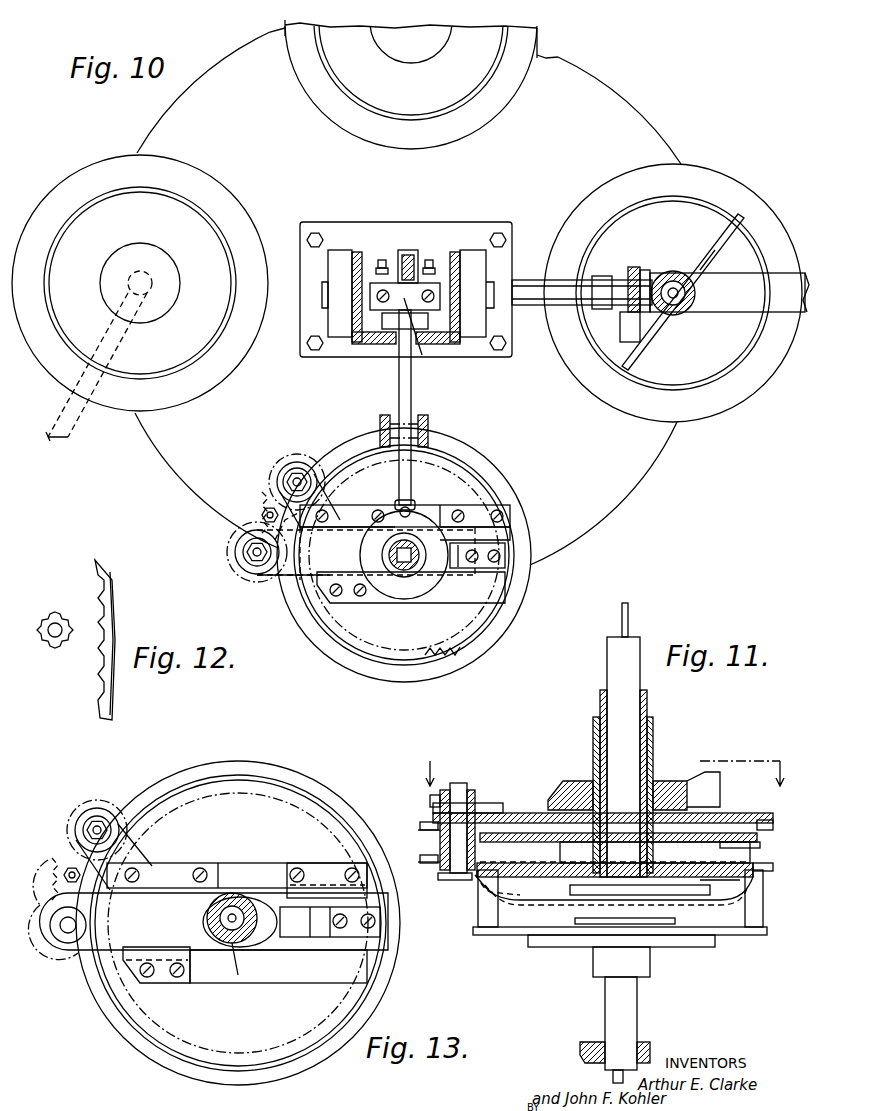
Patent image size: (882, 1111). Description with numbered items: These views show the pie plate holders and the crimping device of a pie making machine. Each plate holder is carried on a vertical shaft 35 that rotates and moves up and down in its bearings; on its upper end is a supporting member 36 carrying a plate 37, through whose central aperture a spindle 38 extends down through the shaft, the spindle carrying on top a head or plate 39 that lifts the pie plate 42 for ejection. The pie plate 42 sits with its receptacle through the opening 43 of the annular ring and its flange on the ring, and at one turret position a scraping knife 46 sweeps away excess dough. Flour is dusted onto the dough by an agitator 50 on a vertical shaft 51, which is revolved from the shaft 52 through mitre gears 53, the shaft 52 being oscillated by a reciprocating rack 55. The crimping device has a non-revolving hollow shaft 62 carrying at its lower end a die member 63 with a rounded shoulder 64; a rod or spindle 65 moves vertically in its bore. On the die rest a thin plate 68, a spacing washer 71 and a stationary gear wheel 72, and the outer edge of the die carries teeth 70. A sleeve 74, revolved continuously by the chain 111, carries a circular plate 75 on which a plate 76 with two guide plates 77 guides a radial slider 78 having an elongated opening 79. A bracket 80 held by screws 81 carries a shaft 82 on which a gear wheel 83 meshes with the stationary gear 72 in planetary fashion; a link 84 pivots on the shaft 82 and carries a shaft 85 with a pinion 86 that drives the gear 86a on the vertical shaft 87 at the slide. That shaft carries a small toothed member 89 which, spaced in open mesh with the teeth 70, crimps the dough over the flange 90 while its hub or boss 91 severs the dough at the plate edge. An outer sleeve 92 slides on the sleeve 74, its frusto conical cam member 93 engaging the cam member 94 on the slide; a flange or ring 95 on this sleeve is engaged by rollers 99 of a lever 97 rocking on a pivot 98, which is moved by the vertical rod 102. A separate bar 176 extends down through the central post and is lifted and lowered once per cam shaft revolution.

In FIG. 11, the vertical shaft 35 is at (638, 1005).
In FIG. 11, the supporting member 36 is at (533, 948).
In FIG. 11, the plate 37 is at (478, 937).
In FIG. 11, the spindle 38 is at (610, 1076).
In FIG. 10, the head or plate 39 is at (140, 283).
In FIG. 11, the head or plate 39 is at (585, 924).
In FIG. 11, the pie plate 42 is at (536, 900).
In FIG. 10, the opening 43 is at (362, 130).
In FIG. 11, the opening 43 is at (772, 885).
In FIG. 10, the scraping knife 46 is at (66, 440).
In FIG. 10, the agitator 50 is at (700, 242).
In FIG. 10, the vertical shaft 51 is at (713, 260).
In FIG. 10, the shaft 52 is at (520, 290).
In FIG. 10, the mitre gears 53 is at (670, 318).
In FIG. 10, the rack 55 is at (404, 265).
In FIG. 13, the hollow shaft 62 is at (230, 905).
In FIG. 11, the hollow shaft 62 is at (623, 757).
In FIG. 11, the die member 63 is at (672, 895).
In FIG. 11, the rounded shoulder 64 is at (712, 892).
In FIG. 13, the rod or spindle 65 is at (228, 918).
In FIG. 11, the rod or spindle 65 is at (630, 615).
In FIG. 11, the thin plate 68 is at (725, 868).
In FIG. 12, the teeth 70 is at (92, 688).
In FIG. 11, the teeth 70 is at (760, 877).
In FIG. 11, the spacing member or washer 71 is at (675, 855).
In FIG. 13, the gear wheel 72 is at (118, 1005).
In FIG. 11, the gear wheel 72 is at (762, 845).
In FIG. 13, the hollow shaft or sleeve 74 is at (237, 962).
In FIG. 11, the hollow shaft or sleeve 74 is at (648, 710).
In FIG. 13, the circular plate 75 is at (238, 923).
In FIG. 11, the circular plate 75 is at (530, 815).
In FIG. 10, the plate 76 is at (378, 603).
In FIG. 13, the plate 76 is at (278, 966).
In FIG. 13, the plates 77 is at (312, 866).
In FIG. 10, the slider 78 is at (366, 553).
In FIG. 13, the slider 78 is at (214, 921).
In FIG. 11, the slider 78 is at (509, 802).
In FIG. 13, the elongated central opening 79 is at (258, 905).
In FIG. 10, the bracket 80 is at (352, 510).
In FIG. 13, the bracket 80 is at (170, 866).
In FIG. 13, the screws 81 is at (202, 866).
In FIG. 13, the shaft 82 is at (98, 828).
In FIG. 10, the gear wheel 83 is at (298, 460).
In FIG. 13, the gear wheel 83 is at (78, 808).
In FIG. 10, the link 84 is at (268, 505).
In FIG. 13, the link 84 is at (77, 862).
In FIG. 13, the shaft 85 is at (48, 886).
In FIG. 10, the pinion 86 is at (252, 503).
In FIG. 13, the pinion 86 is at (43, 870).
In FIG. 10, the gear 86a is at (253, 575).
In FIG. 13, the gear 86a is at (38, 945).
In FIG. 11, the gear 86a is at (417, 833).
In FIG. 13, the vertical shaft 87 is at (68, 935).
In FIG. 11, the vertical shaft 87 is at (457, 783).
In FIG. 12, the small toothed member 89 is at (55, 650).
In FIG. 11, the small toothed member 89 is at (417, 855).
In FIG. 11, the flange 90 is at (487, 890).
In FIG. 11, the hub or boss 91 is at (440, 882).
In FIG. 11, the outer sleeve 92 is at (592, 748).
In FIG. 11, the frusto conical cam member 93 is at (568, 782).
In FIG. 10, the cam member 94 is at (458, 568).
In FIG. 13, the cam member 94 is at (320, 925).
In FIG. 11, the cam member 94 is at (700, 778).
In FIG. 10, the flange or ring 95 is at (360, 554).
In FIG. 10, the lever 97 is at (400, 472).
In FIG. 10, the pivot 98 is at (430, 428).
In FIG. 10, the rollers 99 is at (415, 504).
In FIG. 10, the vertical rod 102 is at (388, 322).
In FIG. 10, the chain 111 is at (430, 262).
In FIG. 10, the bar 176 is at (424, 355).